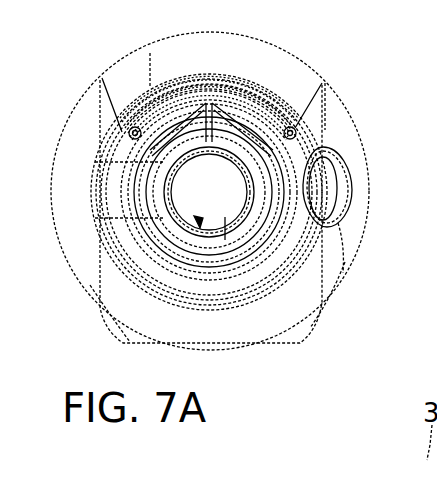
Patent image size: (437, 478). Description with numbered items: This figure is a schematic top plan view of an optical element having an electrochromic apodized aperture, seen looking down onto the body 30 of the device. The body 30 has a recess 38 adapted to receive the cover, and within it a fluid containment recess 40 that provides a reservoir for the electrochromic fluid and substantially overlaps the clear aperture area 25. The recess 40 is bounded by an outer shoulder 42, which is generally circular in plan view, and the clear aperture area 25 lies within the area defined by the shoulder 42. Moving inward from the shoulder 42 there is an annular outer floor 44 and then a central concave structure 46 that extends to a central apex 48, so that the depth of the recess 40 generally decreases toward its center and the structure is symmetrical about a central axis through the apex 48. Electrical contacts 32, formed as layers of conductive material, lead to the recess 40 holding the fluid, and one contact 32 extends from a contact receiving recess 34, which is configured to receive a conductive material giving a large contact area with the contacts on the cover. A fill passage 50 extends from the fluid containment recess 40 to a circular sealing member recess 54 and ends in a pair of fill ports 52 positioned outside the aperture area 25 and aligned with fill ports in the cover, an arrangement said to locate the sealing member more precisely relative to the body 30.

The clear aperture area 25 is at (145, 338).
The body 30 is at (276, 60).
The electrical contact 32 is at (98, 298).
The contact receiving recess 34 is at (343, 273).
The cover recess 38 is at (190, 260).
The fluid containment recess 40 is at (185, 342).
The outer shoulder 42 is at (258, 252).
The annular outer floor 44 is at (213, 192).
The central concave structure 46 is at (250, 250).
The central apex 48 is at (90, 290).
The fill passage 50 is at (150, 53).
The fill port 52 is at (130, 128).
The sealing member recess 54 is at (262, 265).